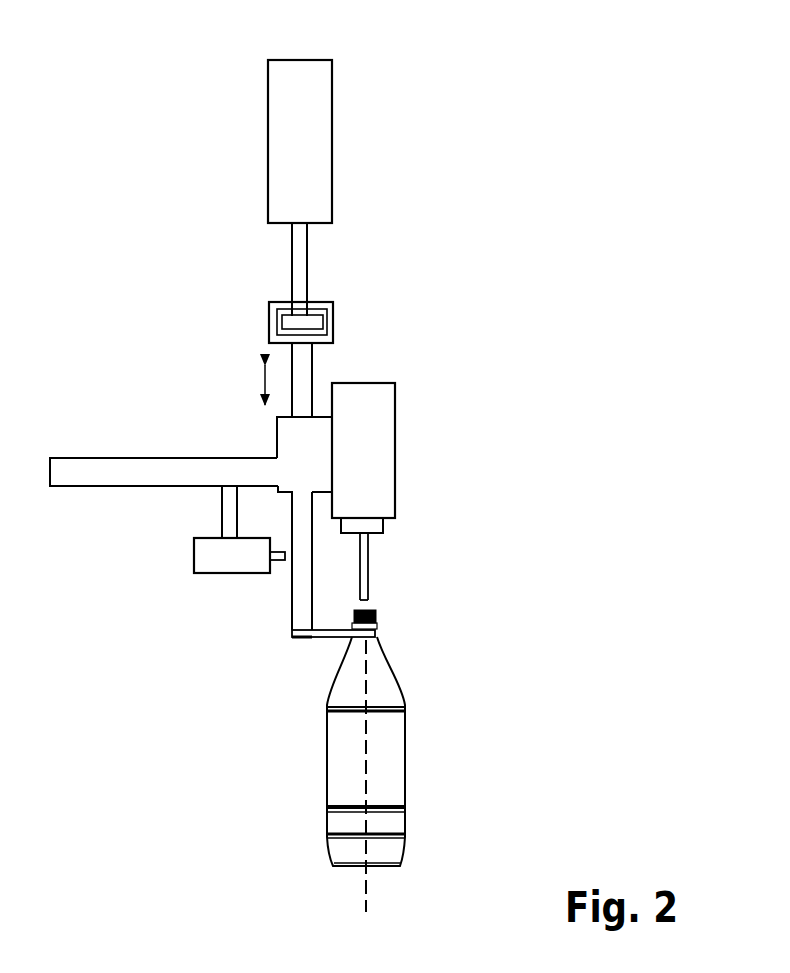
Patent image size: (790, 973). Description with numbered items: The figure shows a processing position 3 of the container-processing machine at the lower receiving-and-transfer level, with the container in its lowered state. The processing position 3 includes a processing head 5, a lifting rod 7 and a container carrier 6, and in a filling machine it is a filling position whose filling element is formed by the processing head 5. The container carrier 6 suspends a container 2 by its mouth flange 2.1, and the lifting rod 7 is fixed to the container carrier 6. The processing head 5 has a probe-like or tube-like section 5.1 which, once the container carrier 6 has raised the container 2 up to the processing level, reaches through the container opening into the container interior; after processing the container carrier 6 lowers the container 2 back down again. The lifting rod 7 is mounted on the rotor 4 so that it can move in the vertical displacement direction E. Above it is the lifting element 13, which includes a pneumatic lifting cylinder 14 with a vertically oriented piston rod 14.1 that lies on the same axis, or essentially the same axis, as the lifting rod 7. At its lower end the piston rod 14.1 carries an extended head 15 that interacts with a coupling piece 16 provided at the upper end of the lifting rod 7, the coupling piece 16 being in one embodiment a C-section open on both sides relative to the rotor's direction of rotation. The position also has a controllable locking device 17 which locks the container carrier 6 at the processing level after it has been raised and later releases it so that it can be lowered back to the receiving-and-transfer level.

The container 2 is at (425, 761).
The mouth flange 2.1 is at (377, 623).
The processing position 3 is at (473, 438).
The rotor 4 is at (127, 473).
The processing head 5 is at (387, 480).
The probe-like or tube-like section 5.1 is at (368, 563).
The container carrier 6 is at (328, 638).
The lifting rod 7 is at (300, 590).
The lifting element 13 is at (238, 169).
The pneumatic lifting cylinder 14 is at (315, 162).
The piston rod 14.1 is at (300, 262).
The extended head 15 is at (296, 319).
The coupling piece 16 is at (263, 337).
The controllable locking device 17 is at (213, 549).